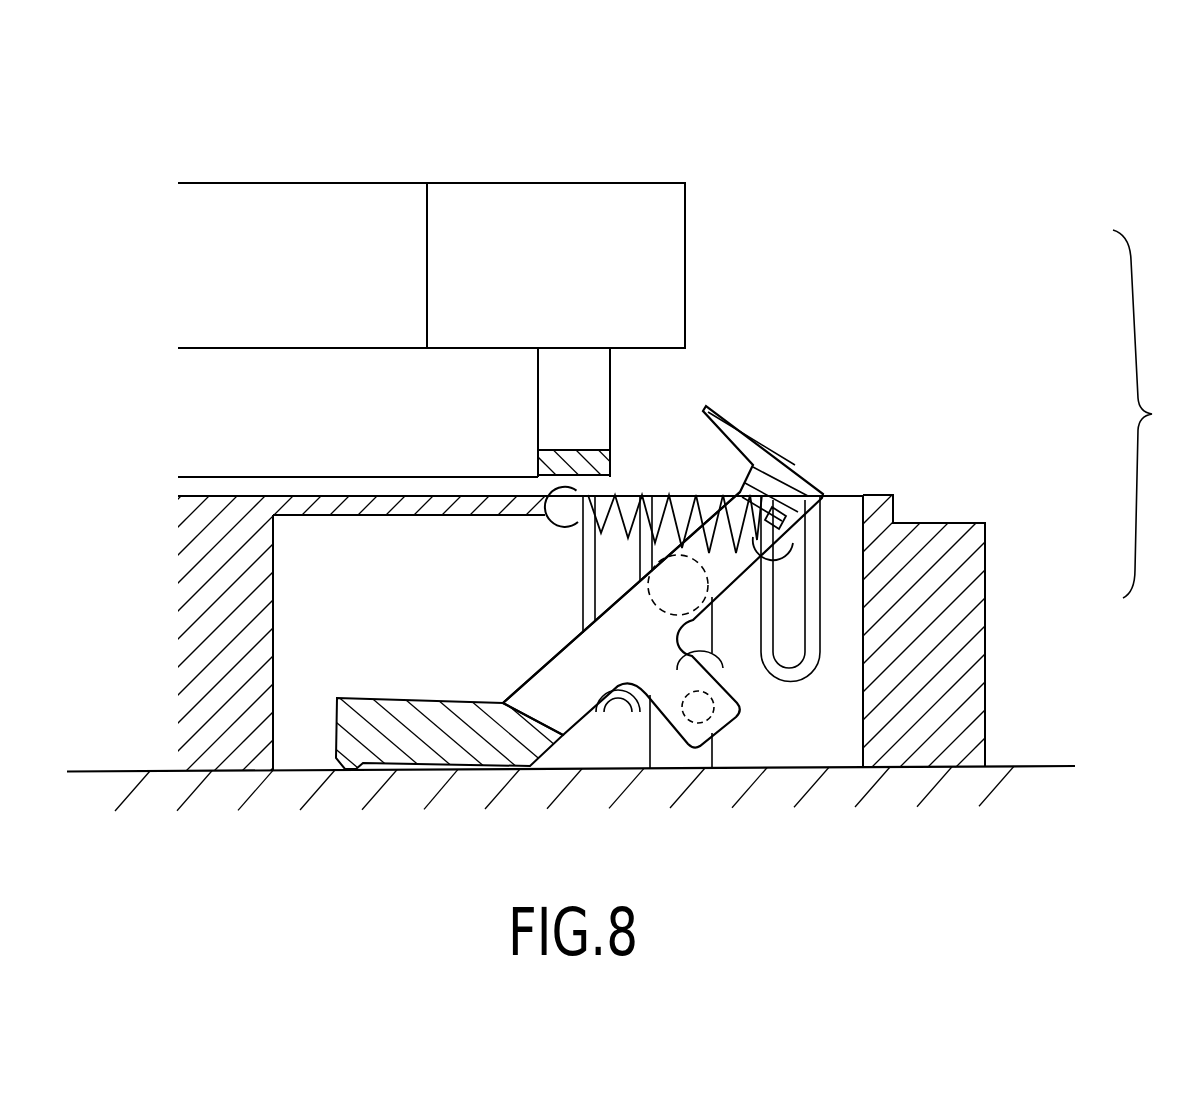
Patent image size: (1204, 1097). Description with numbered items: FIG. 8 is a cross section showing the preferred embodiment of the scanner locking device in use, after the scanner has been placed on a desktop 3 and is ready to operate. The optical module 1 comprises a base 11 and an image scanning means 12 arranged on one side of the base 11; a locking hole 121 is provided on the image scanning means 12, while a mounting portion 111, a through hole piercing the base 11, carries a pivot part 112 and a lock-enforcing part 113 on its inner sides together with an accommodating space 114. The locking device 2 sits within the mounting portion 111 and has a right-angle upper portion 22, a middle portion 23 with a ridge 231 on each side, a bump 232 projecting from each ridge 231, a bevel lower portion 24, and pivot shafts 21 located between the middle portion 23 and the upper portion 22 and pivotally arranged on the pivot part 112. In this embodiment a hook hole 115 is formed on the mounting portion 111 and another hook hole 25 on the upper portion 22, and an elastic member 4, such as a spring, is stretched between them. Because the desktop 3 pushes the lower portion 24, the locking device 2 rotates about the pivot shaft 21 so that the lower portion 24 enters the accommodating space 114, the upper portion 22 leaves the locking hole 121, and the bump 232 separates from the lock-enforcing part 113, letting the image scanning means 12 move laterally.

The optical module 1 is at (1147, 414).
The locking device 2 is at (489, 778).
The desktop 3 is at (1031, 757).
The elastic member 4 is at (605, 542).
The base 11 is at (893, 495).
The image scanning means 12 is at (500, 182).
The pivot shaft 21 is at (690, 609).
The upper portion 22 is at (748, 436).
The middle portion 23 is at (627, 635).
The lower portion 24 is at (397, 710).
The hook hole 25 is at (793, 503).
The mounting portion 111 is at (669, 494).
The pivot part 112 is at (657, 742).
The lock-enforcing part 113 is at (790, 640).
The accommodating space 114 is at (297, 598).
The hook hole 115 is at (545, 514).
The locking hole 121 is at (557, 386).
The ridge 231 is at (723, 665).
The bump 232 is at (698, 723).